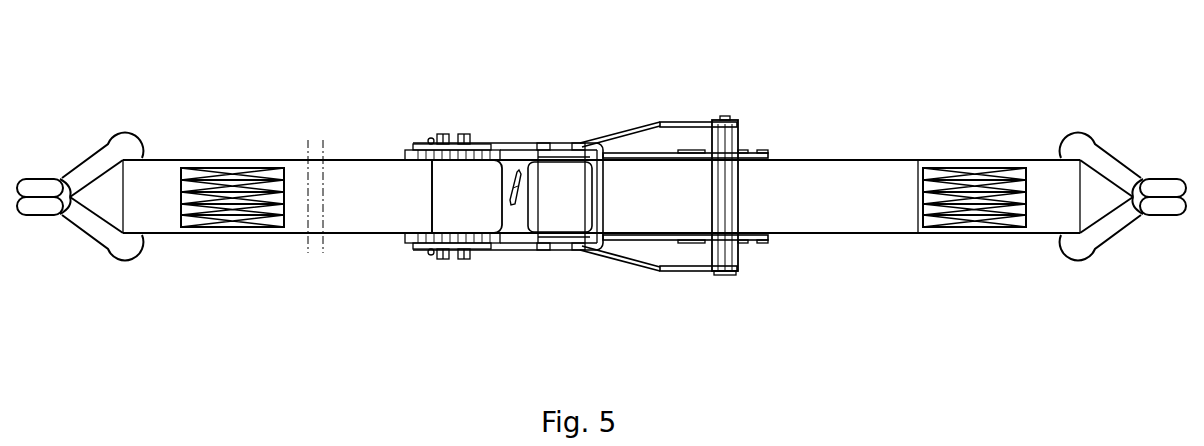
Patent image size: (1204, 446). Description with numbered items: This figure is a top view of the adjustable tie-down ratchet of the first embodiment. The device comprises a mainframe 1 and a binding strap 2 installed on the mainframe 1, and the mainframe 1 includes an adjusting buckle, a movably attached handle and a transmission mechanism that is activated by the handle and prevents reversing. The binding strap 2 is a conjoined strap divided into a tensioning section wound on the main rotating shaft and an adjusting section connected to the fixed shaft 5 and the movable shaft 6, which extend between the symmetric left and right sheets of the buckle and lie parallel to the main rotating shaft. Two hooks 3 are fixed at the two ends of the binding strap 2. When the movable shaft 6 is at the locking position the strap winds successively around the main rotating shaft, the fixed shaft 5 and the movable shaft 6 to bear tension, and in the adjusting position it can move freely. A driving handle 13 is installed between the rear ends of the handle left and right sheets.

The mainframe 1 is at (519, 102).
The binding strap 2 is at (825, 210).
The hook 3 is at (118, 143).
The fixed shaft 5 is at (690, 243).
The movable shaft 6 is at (740, 244).
The driving handle 13 is at (723, 258).